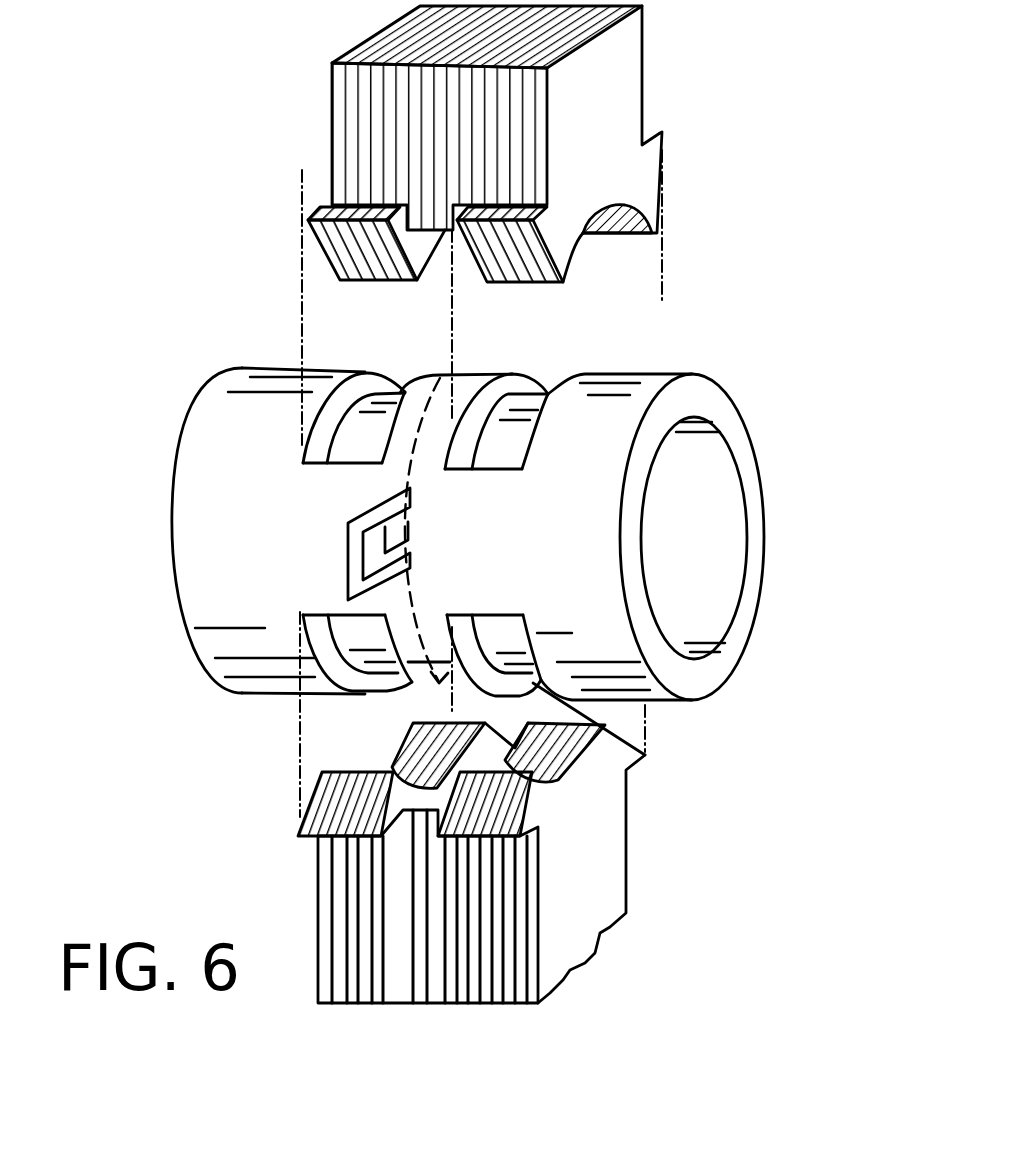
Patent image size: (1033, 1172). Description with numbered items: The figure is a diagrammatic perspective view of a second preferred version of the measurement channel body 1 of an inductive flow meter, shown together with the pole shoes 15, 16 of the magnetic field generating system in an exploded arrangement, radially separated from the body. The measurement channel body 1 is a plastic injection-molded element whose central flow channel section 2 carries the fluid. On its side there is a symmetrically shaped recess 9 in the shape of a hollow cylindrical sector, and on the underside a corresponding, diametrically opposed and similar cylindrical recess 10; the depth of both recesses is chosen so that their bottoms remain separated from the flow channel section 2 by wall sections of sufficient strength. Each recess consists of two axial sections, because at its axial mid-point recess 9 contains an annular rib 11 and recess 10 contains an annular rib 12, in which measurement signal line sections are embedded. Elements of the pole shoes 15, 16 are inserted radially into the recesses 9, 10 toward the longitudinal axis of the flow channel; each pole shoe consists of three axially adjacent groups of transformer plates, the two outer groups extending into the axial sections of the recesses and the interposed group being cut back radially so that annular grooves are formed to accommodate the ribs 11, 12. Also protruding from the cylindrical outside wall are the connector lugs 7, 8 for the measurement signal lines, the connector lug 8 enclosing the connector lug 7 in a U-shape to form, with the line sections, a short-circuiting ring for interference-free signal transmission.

The measurement channel body 1 is at (740, 438).
The flow channel section of the measurement channel body 2 is at (692, 540).
The connector lug 7 is at (372, 518).
The connector lug 8 is at (350, 568).
The recess 9 is at (403, 385).
The recess 10 is at (398, 680).
The annular rib 11 is at (466, 385).
The annular rib 12 is at (430, 683).
The pole shoe 15 is at (618, 95).
The pole shoe 16 is at (568, 937).